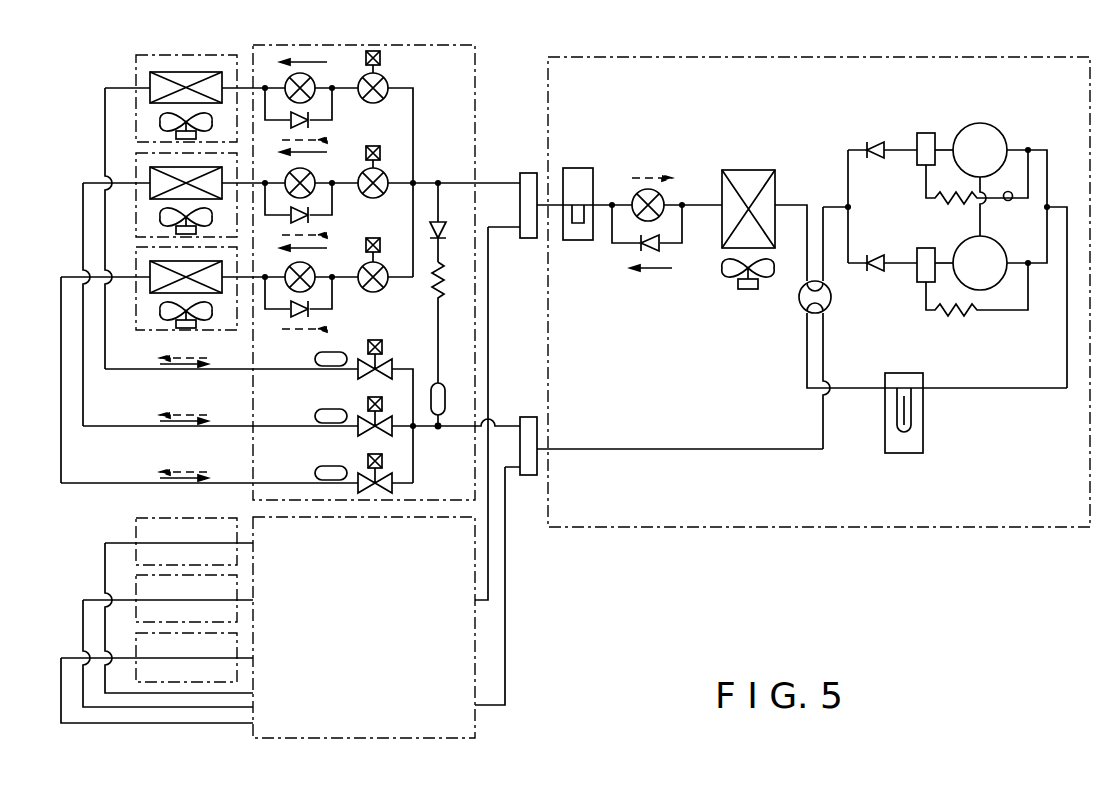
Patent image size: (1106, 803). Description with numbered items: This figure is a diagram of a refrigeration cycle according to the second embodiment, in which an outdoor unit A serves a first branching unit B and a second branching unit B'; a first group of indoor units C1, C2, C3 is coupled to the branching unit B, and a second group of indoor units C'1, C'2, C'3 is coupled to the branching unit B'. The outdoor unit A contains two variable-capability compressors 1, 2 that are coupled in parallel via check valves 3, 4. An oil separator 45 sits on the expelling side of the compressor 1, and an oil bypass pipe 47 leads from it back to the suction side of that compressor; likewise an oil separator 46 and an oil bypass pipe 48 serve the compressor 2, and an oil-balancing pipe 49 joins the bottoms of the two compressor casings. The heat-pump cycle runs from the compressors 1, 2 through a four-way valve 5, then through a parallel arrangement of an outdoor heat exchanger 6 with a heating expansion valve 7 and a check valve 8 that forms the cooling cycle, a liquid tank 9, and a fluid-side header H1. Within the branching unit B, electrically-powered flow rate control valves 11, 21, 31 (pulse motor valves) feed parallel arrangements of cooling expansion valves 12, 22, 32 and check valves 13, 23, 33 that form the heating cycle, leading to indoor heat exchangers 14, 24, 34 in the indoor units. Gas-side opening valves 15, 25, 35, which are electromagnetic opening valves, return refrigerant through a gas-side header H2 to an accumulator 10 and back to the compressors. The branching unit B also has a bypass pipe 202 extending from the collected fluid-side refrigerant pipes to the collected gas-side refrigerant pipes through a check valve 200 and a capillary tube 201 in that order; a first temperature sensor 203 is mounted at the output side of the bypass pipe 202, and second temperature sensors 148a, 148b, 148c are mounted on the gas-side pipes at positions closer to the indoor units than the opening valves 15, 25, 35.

The compressor 1 is at (997, 130).
The compressor 2 is at (1006, 246).
The check valve 3 is at (876, 139).
The check valve 4 is at (878, 274).
The four-way valve 5 is at (800, 304).
The outdoor heat exchanger 6 is at (750, 168).
The heating expansion valve 7 is at (666, 195).
The check valve 8 is at (660, 256).
The liquid tank 9 is at (577, 168).
The accumulator 10 is at (923, 435).
The electrically-powered flow rate control valve 11 is at (386, 78).
The cooling expansion valve 12 is at (310, 80).
The check valve 13 is at (310, 120).
The indoor heat exchanger 14 is at (150, 107).
The gas-side opening valve 15 is at (384, 356).
The electrically-powered flow rate control valve 21 is at (384, 168).
The cooling expansion valve 22 is at (310, 173).
The check valve 23 is at (311, 215).
The indoor heat exchanger 24 is at (150, 202).
The gas-side opening valve 25 is at (380, 420).
The electrically-powered flow rate control valve 31 is at (385, 263).
The cooling expansion valve 32 is at (310, 268).
The check valve 33 is at (311, 309).
The indoor heat exchanger 34 is at (150, 294).
The gas-side opening valve 35 is at (398, 478).
The oil separator 45 is at (917, 165).
The oil separator 46 is at (921, 282).
The oil bypass pipe 47 is at (1008, 201).
The oil bypass pipe 48 is at (1004, 310).
The oil-balancing pipe 49 is at (979, 214).
The second temperature sensor 148a is at (316, 356).
The second temperature sensor 148b is at (316, 413).
The second temperature sensor 148c is at (316, 471).
The check valve 200 is at (440, 208).
The capillary tube 201 is at (442, 290).
The bypass pipe 202 is at (426, 332).
The first temperature sensor 203 is at (440, 428).
The outdoor unit A is at (548, 118).
The first branching unit B is at (378, 272).
The second branching unit B' is at (388, 628).
The indoor unit C1 is at (136, 68).
The indoor unit C2 is at (136, 165).
The indoor unit C3 is at (136, 259).
The indoor unit C'1 is at (158, 538).
The indoor unit C'2 is at (150, 597).
The indoor unit C'3 is at (140, 656).
The fluid-side header H1 is at (527, 176).
The gas-side header H2 is at (526, 417).